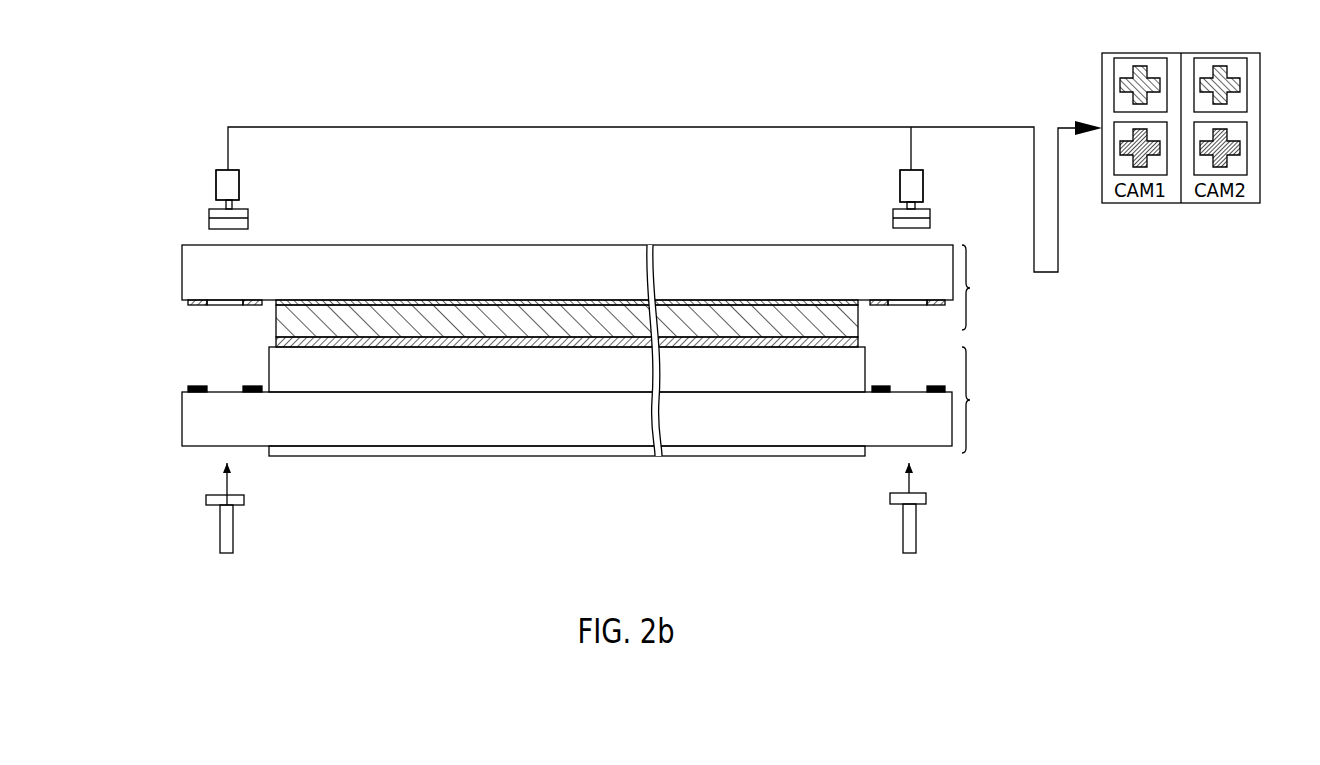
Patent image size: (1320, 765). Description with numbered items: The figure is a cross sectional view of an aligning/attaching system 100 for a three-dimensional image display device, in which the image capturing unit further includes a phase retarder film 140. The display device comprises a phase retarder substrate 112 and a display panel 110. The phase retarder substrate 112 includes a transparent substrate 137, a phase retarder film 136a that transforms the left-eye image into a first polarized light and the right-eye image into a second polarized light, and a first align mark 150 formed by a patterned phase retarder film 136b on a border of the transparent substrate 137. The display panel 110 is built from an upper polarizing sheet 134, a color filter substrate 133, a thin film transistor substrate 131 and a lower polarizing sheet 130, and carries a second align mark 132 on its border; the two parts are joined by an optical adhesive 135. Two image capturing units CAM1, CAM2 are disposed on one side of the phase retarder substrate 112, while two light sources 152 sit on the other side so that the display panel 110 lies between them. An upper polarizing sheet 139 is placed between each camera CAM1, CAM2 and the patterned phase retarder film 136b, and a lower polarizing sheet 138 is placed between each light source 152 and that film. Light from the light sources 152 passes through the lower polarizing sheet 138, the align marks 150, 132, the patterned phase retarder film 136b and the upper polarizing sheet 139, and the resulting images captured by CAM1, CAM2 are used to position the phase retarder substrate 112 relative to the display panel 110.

The aligning/attaching system 100 is at (236, 95).
The display panel 110 is at (983, 400).
The phase retarder substrate 112 is at (983, 287).
The lower polarizing sheet 130 is at (277, 451).
The thin film transistor substrate 131 is at (198, 414).
The second align mark 132 is at (188, 387).
The color filter substrate 133 is at (522, 365).
The upper polarizing sheet 134 is at (473, 338).
The optical adhesive 135 is at (423, 312).
The phase retarder film 136a is at (378, 300).
The patterned phase retarder film 136b is at (190, 303).
The transparent substrate 137 is at (192, 273).
The lower polarizing sheet 138 is at (206, 500).
The upper polarizing sheet 139 is at (248, 213).
The phase retarder film 140 is at (209, 218).
The first align mark 150 is at (200, 314).
The light source 152 is at (220, 529).
The image capturing unit CAM1 is at (248, 182).
The image capturing unit CAM2 is at (932, 182).